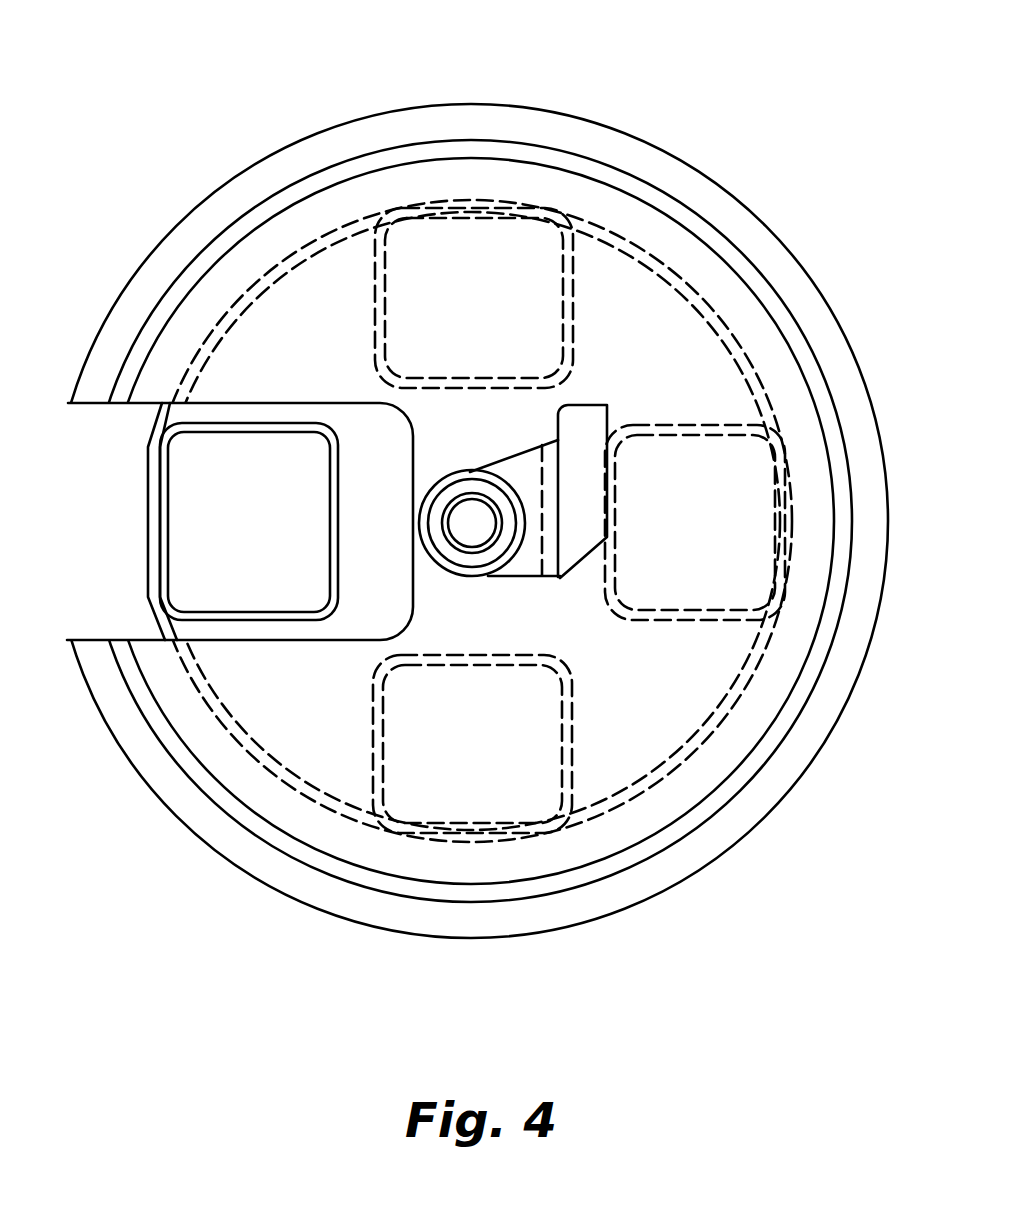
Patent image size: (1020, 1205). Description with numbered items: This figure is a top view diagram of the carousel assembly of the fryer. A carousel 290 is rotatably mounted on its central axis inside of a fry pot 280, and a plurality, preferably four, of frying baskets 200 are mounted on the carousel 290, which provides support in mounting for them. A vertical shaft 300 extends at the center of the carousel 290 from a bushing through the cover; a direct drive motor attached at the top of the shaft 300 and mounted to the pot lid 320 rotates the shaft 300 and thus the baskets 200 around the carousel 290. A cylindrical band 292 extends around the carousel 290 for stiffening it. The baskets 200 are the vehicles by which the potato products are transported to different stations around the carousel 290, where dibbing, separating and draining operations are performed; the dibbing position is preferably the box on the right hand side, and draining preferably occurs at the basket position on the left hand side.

The frying baskets 200 is at (573, 303).
The fry pot 280 is at (672, 706).
The carousel 290 is at (642, 320).
The cylindrical band 292 is at (250, 767).
The vertical shaft 300 is at (455, 548).
The pot lid 320 is at (490, 860).